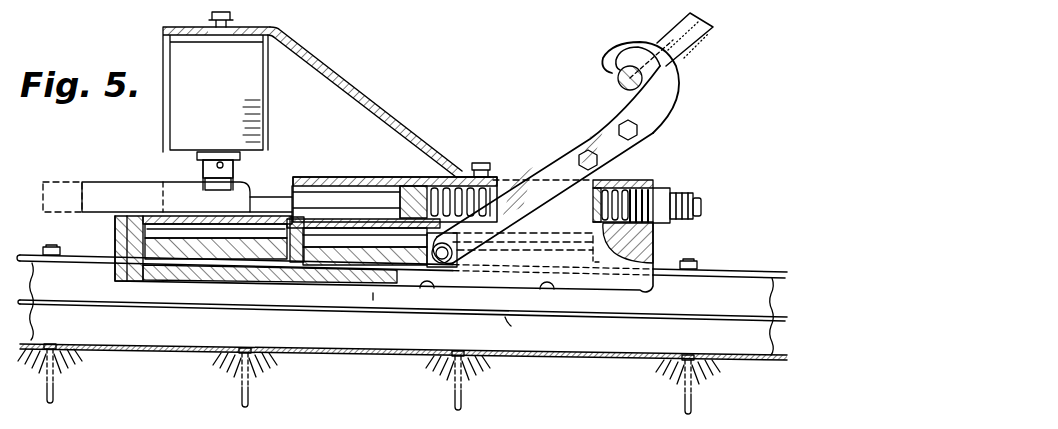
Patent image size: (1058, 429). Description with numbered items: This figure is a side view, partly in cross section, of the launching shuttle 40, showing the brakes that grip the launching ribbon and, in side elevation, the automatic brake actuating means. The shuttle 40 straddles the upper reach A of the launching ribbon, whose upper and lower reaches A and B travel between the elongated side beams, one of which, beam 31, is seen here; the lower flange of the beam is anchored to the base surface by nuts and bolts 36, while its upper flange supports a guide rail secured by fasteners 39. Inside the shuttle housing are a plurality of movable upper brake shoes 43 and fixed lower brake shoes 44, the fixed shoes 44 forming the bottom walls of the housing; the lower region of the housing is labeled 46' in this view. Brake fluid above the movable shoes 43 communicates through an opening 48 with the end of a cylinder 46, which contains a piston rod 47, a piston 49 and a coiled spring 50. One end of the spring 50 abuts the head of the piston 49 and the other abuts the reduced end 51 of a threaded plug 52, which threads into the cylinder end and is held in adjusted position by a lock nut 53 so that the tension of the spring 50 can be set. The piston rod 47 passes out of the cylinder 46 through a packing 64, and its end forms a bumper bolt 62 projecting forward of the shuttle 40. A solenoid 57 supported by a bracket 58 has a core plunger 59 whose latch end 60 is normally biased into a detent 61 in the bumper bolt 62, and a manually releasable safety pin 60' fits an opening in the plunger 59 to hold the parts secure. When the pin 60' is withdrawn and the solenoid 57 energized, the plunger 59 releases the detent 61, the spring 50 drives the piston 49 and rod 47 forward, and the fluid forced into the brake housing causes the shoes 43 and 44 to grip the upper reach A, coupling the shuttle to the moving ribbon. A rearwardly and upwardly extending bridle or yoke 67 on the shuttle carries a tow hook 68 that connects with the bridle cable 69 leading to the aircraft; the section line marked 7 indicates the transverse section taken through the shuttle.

The section line 7- 7 is at (378, 75).
The elongated beam 31 is at (155, 343).
The bolts 36 is at (59, 385).
The fasteners 39 is at (711, 263).
The launching shuttle 40 is at (463, 158).
The brake shoes 43 is at (245, 246).
The brake shoes 44 is at (180, 279).
The cylinder 46 is at (291, 181).
The lower piston 46' is at (331, 265).
The piston rod 47 is at (372, 200).
The opening 48 is at (310, 222).
The piston 49 is at (428, 177).
The coiled spring 50 is at (441, 233).
The reduced end 51 is at (620, 195).
The threaded plug 52 is at (674, 197).
The lock nut 53 is at (655, 227).
The solenoid 57 is at (258, 130).
The bracket 58 is at (388, 110).
The core plunger 59 is at (200, 165).
The latch end 60 is at (201, 194).
The safety pin 60' is at (218, 147).
The detent 61 is at (222, 182).
The bumper bolt 62 is at (97, 172).
The packing 64 is at (303, 181).
The bridle or yoke 67 is at (565, 152).
The tow hook 68 is at (665, 96).
The bridle cable 69 is at (686, 52).
The upper reach A is at (363, 298).
The lower reach B is at (516, 328).